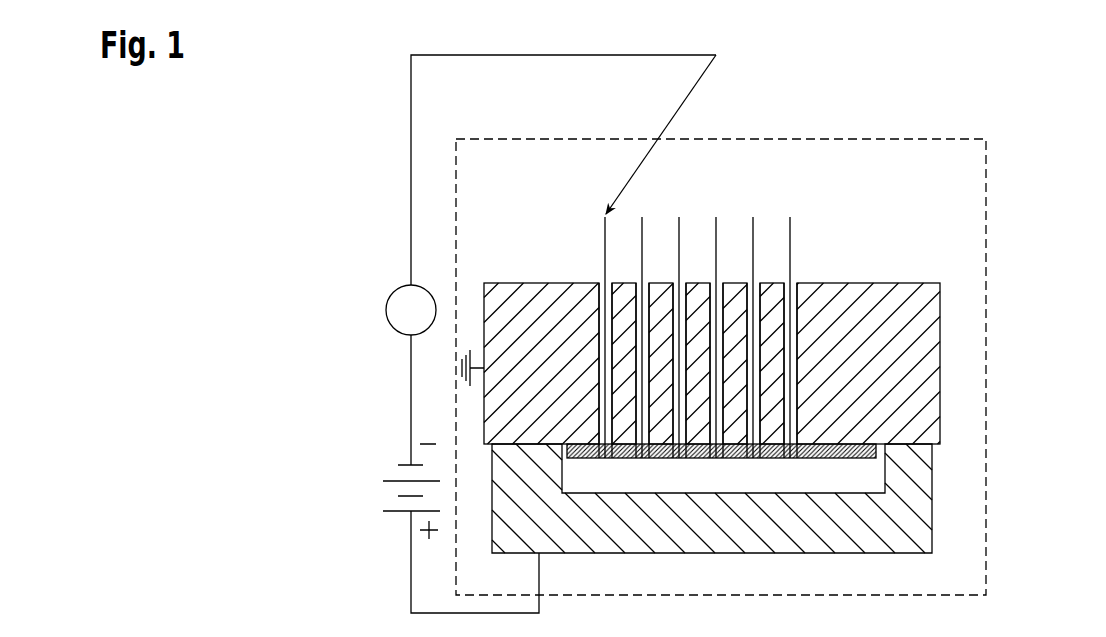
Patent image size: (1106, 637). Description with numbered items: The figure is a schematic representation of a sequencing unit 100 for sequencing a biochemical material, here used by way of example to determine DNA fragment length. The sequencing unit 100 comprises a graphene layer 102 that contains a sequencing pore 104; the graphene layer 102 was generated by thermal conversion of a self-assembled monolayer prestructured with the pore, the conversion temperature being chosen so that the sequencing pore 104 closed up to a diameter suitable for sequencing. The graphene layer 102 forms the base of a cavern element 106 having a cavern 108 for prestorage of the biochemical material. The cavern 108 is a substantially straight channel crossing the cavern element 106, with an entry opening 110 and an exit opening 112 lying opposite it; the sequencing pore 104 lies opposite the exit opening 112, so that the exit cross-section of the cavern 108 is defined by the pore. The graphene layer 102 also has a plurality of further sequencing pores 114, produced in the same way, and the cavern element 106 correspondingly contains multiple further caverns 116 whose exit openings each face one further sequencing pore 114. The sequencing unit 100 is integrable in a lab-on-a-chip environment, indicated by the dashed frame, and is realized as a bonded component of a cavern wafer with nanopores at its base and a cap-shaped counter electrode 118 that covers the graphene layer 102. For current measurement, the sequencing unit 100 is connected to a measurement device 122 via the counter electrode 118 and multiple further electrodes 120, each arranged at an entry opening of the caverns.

The sequencing unit 100 is at (500, 247).
The graphene layer 102 is at (859, 459).
The sequencing pore 104 is at (799, 469).
The cavern element 106 is at (785, 309).
The cavern 108 is at (712, 308).
The entry opening 110 is at (793, 282).
The exit opening 112 is at (786, 422).
The further sequencing pores 114 is at (681, 464).
The further caverns 116 is at (604, 306).
The counter electrode 118 is at (770, 554).
The further electrodes 120 is at (754, 232).
The measurement device 122 is at (386, 311).